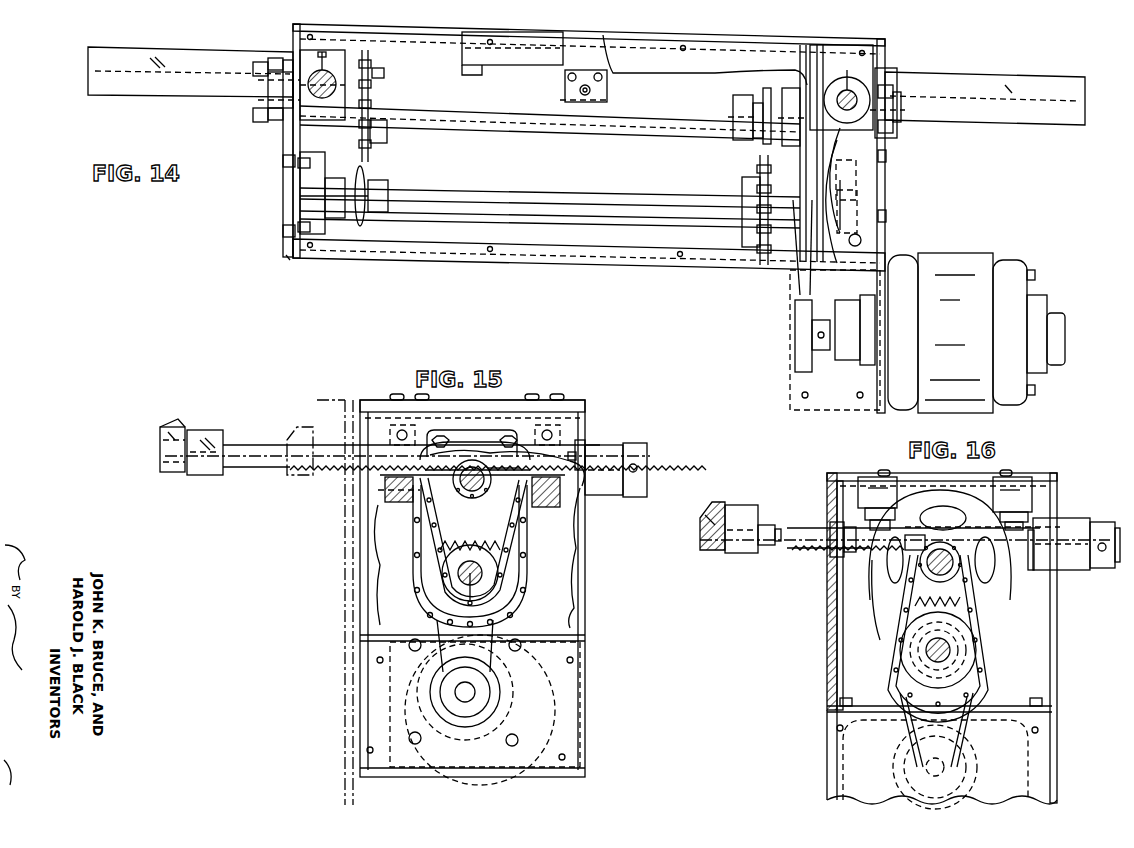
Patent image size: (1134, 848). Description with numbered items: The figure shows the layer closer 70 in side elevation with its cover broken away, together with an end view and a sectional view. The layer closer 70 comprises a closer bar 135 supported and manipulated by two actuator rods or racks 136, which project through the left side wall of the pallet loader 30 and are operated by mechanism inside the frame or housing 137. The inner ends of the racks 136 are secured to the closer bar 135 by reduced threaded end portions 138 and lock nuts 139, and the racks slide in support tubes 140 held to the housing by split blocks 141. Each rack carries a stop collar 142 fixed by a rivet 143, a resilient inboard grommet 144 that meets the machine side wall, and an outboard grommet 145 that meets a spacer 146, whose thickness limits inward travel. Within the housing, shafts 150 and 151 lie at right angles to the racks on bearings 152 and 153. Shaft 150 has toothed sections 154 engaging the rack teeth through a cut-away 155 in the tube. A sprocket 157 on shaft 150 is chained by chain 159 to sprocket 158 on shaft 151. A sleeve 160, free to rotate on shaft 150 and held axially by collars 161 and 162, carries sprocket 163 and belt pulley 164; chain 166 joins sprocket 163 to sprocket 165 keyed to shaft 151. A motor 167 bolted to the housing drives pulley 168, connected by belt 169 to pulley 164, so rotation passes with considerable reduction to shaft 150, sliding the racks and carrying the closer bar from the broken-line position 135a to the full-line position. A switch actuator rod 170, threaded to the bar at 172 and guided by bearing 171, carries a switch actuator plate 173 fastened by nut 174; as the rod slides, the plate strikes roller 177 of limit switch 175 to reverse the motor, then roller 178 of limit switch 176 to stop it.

In FIG. 15, the pallet loader 30 is at (340, 728).
In FIG. 14, the layer closer 70 is at (284, 260).
In FIG. 14, the closer bar 135 is at (148, 90).
In FIG. 15, the closer bar 135 is at (170, 420).
In FIG. 16, the closer bar 135 is at (716, 504).
In FIG. 15, the closer bar retracted position 135a is at (308, 424).
In FIG. 14, the actuator rods or racks 136 is at (333, 76).
In FIG. 15, the actuator rods or racks 136 is at (270, 468).
In FIG. 16, the actuator rods or racks 136 is at (825, 527).
In FIG. 14, the frame or housing 137 is at (645, 260).
In FIG. 15, the frame or housing 137 is at (585, 604).
In FIG. 16, the frame or housing 137 is at (828, 641).
In FIG. 15, the reduced threaded end portions 138 is at (196, 476).
In FIG. 15, the lock nuts 139 is at (168, 474).
In FIG. 14, the support tubes 140 is at (334, 80).
In FIG. 15, the support tubes 140 is at (470, 490).
In FIG. 16, the support tubes 140 is at (939, 605).
In FIG. 14, the split blocks 141 is at (305, 50).
In FIG. 15, the split blocks 141 is at (395, 502).
In FIG. 15, the stop collar 142 is at (638, 496).
In FIG. 16, the stop collar 142 is at (1110, 521).
In FIG. 15, the rivet 143 is at (638, 468).
In FIG. 16, the rivet 143 is at (1100, 550).
In FIG. 15, the inboard grommet 144 is at (206, 428).
In FIG. 16, the inboard grommet 144 is at (743, 520).
In FIG. 15, the outboard grommet 145 is at (602, 454).
In FIG. 16, the outboard grommet 145 is at (1058, 518).
In FIG. 15, the spacer 146 is at (580, 442).
In FIG. 16, the spacer 146 is at (1042, 568).
In FIG. 14, the shaft 150 is at (473, 112).
In FIG. 15, the shaft 150 is at (494, 462).
In FIG. 14, the shaft 151 is at (530, 206).
In FIG. 15, the shaft 151 is at (488, 583).
In FIG. 14, the bearings 152 is at (268, 124).
In FIG. 15, the bearings 152 is at (478, 432).
In FIG. 14, the bearings 153 is at (300, 175).
In FIG. 14, the toothed sections 154 is at (254, 108).
In FIG. 15, the toothed sections 154 is at (502, 498).
In FIG. 15, the cut-away portion 155 is at (495, 482).
In FIG. 14, the sprocket 157 is at (387, 130).
In FIG. 15, the sprocket 157 is at (520, 512).
In FIG. 14, the sprocket 158 is at (380, 212).
In FIG. 14, the chain 159 is at (370, 150).
In FIG. 15, the chain 159 is at (434, 503).
In FIG. 14, the sleeve 160 is at (766, 138).
In FIG. 14, the collar 161 is at (740, 135).
In FIG. 16, the collar 161 is at (953, 578).
In FIG. 14, the collar 162 is at (848, 140).
In FIG. 14, the sprocket 163 is at (758, 96).
In FIG. 16, the sprocket 163 is at (880, 585).
In FIG. 14, the belt pulley 164 is at (791, 98).
In FIG. 16, the belt pulley 164 is at (884, 558).
In FIG. 14, the sprocket 165 is at (742, 188).
In FIG. 15, the sprocket 165 is at (413, 600).
In FIG. 16, the sprocket 165 is at (898, 646).
In FIG. 14, the chain 166 is at (760, 158).
In FIG. 15, the chain 166 is at (418, 564).
In FIG. 16, the chain 166 is at (990, 647).
In FIG. 14, the motor 167 is at (1011, 270).
In FIG. 15, the motor 167 is at (556, 724).
In FIG. 16, the motor 167 is at (855, 738).
In FIG. 14, the pulley 168 is at (825, 347).
In FIG. 15, the pulley 168 is at (450, 692).
In FIG. 14, the belt 169 is at (810, 207).
In FIG. 15, the belt 169 is at (440, 655).
In FIG. 16, the belt 169 is at (978, 695).
In FIG. 14, the switch actuator rod 170 is at (592, 88).
In FIG. 16, the switch actuator rod 170 is at (790, 547).
In FIG. 14, the guide bearing 171 is at (603, 74).
In FIG. 16, the guide bearing 171 is at (842, 555).
In FIG. 16, the threaded connection 172 is at (712, 552).
In FIG. 14, the switch actuator plate 173 is at (574, 73).
In FIG. 16, the switch actuator plate 173 is at (912, 518).
In FIG. 14, the nut 174 is at (600, 96).
In FIG. 16, the nut 174 is at (914, 539).
In FIG. 16, the limit switch 175 is at (880, 478).
In FIG. 14, the limit switch 176 is at (498, 70).
In FIG. 16, the limit switch 176 is at (1012, 484).
In FIG. 16, the roller 177 is at (883, 517).
In FIG. 16, the roller 178 is at (1020, 537).